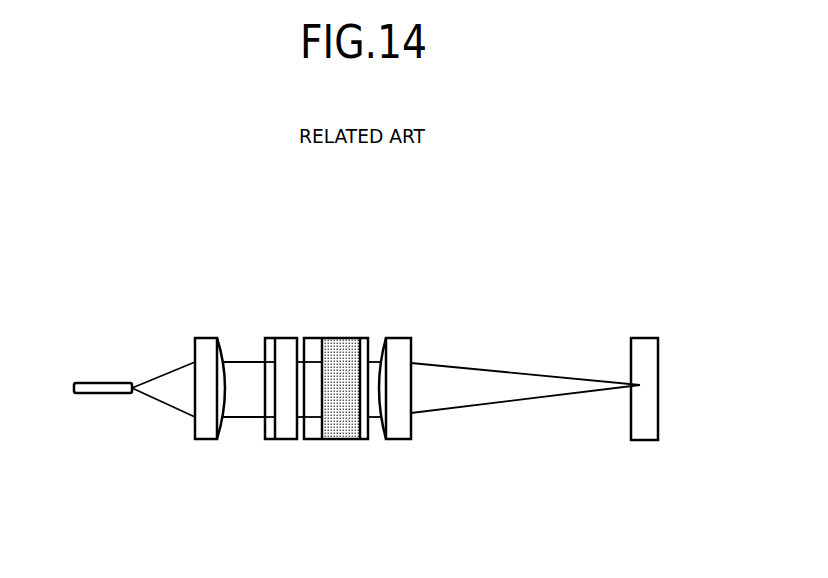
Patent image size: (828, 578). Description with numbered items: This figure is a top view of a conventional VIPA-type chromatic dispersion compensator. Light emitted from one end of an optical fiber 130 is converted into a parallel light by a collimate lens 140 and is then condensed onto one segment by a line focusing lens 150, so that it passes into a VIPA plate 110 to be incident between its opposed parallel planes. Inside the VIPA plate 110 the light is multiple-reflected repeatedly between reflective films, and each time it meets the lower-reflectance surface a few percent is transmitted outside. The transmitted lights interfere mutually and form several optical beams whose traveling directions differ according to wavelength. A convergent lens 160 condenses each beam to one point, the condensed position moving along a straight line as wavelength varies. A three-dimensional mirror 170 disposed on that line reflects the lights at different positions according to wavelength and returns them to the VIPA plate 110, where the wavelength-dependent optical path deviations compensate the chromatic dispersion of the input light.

The VIPA plate 110 is at (339, 337).
The optical fiber 130 is at (102, 382).
The collimate lens 140 is at (203, 338).
The line focusing lens 150 is at (282, 337).
The convergent lens 160 is at (402, 335).
The three-dimensional mirror 170 is at (645, 337).